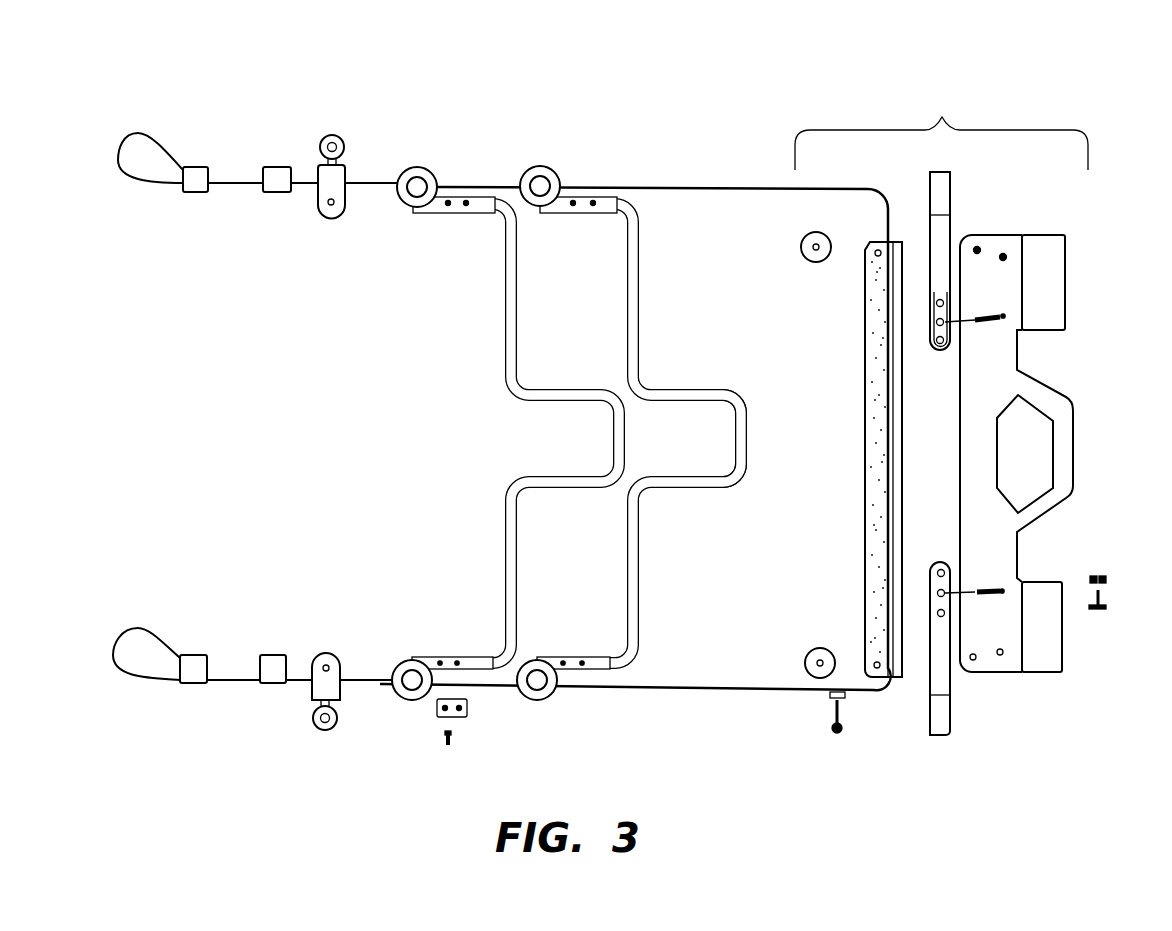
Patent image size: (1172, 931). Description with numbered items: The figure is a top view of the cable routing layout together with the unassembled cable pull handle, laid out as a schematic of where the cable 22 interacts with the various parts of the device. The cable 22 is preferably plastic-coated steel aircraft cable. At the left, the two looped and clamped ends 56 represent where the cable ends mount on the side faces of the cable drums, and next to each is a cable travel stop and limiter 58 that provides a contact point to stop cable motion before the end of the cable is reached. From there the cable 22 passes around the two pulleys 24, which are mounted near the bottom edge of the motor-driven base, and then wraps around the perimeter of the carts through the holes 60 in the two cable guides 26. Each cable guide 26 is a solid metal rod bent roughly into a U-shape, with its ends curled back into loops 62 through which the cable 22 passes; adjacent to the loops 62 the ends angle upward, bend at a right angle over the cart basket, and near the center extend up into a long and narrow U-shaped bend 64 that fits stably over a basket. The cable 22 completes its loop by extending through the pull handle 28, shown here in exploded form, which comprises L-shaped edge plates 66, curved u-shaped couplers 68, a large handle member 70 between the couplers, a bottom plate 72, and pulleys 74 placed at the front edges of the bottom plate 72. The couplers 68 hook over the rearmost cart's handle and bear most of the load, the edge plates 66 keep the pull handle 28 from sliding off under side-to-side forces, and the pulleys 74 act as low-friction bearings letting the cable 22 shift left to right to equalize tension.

The cable 22 is at (668, 188).
The pulleys 24 is at (341, 139).
The cable guides 26 is at (515, 283).
The pull handle 28 is at (967, 441).
The looped and clamped ends 56 is at (208, 92).
The cable travel stop and limiter 58 is at (275, 166).
The holes 60 is at (422, 168).
The loops 62 is at (418, 167).
The long and narrow U-shaped bend 64 is at (706, 388).
The edge plates 66 is at (945, 730).
The u-shaped couplers 68 is at (1065, 253).
The handle member 70 is at (1077, 437).
The bottom plate 72 is at (874, 498).
The pulleys 74 is at (800, 247).